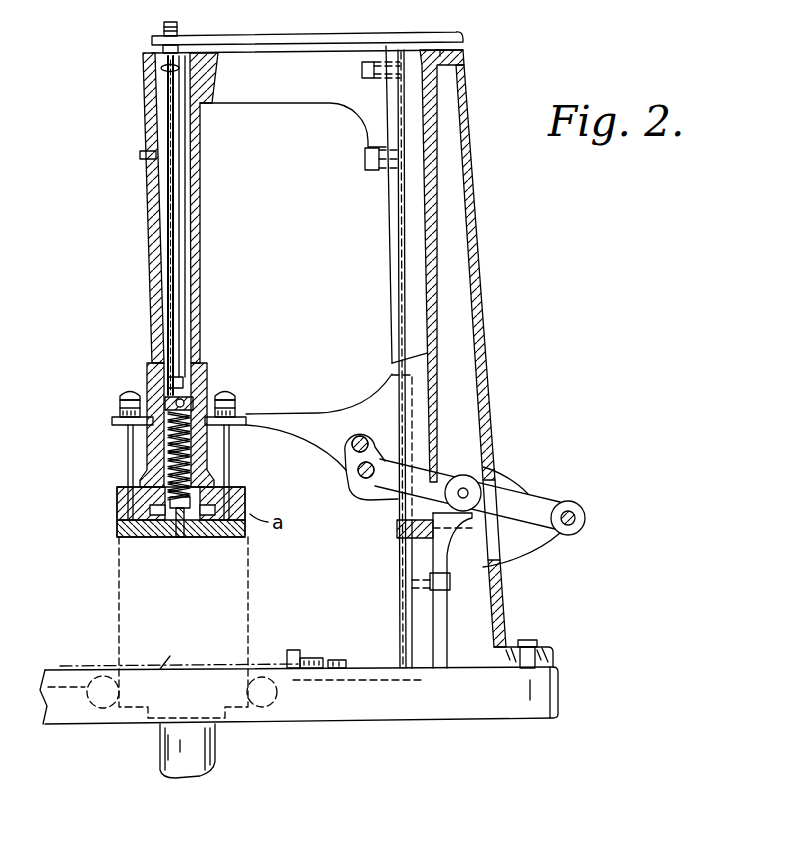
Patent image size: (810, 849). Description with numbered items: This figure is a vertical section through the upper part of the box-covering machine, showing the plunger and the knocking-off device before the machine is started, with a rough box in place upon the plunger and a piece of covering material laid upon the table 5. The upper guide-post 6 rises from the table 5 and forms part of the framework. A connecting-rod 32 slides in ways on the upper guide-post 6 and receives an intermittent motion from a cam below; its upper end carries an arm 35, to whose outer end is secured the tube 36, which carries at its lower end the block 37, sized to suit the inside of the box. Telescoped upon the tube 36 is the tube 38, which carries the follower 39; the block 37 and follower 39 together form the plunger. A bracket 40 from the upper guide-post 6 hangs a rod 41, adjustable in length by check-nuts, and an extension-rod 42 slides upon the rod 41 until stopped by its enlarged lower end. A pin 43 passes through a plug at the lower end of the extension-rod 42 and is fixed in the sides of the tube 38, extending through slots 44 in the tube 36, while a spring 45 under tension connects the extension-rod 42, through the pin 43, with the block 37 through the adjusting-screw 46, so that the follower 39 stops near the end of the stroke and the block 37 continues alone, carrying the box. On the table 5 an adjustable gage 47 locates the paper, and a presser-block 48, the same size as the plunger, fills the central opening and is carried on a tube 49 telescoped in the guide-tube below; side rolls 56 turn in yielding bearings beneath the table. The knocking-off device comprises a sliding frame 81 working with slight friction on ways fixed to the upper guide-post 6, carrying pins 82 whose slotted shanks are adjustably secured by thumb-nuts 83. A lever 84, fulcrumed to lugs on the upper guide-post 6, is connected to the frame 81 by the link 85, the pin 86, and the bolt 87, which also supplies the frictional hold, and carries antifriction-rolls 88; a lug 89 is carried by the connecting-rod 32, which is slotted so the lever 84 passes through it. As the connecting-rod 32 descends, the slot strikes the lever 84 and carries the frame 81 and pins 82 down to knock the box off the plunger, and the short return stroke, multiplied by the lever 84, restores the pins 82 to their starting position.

The table 5 is at (345, 713).
The upper guide-post 6 is at (484, 312).
The connecting-rod 32 is at (390, 227).
The arm 35 is at (290, 97).
The tube 36 is at (198, 254).
The block 37 is at (118, 529).
The tube 38 is at (206, 374).
The follower 39 is at (126, 503).
The bracket 40 is at (283, 41).
The rod 41 is at (176, 218).
The extension-rod 42 is at (187, 293).
The pin 43 is at (170, 405).
The slots 44 is at (173, 362).
The spring 45 is at (180, 458).
The adjusting-screw 46 is at (180, 538).
The gage 47 is at (301, 657).
The presser-block 48 is at (180, 627).
The tube 49 is at (215, 770).
The side rolls 56 is at (104, 704).
The sliding frame 81 is at (300, 418).
The pins 82 is at (125, 465).
The thumb-nuts 83 is at (118, 397).
The lever 84 is at (515, 495).
The link 85 is at (355, 459).
The pin 86 is at (366, 479).
The bolt 87 is at (352, 440).
The antifriction-rolls 88 is at (458, 476).
The lug 89 is at (456, 524).